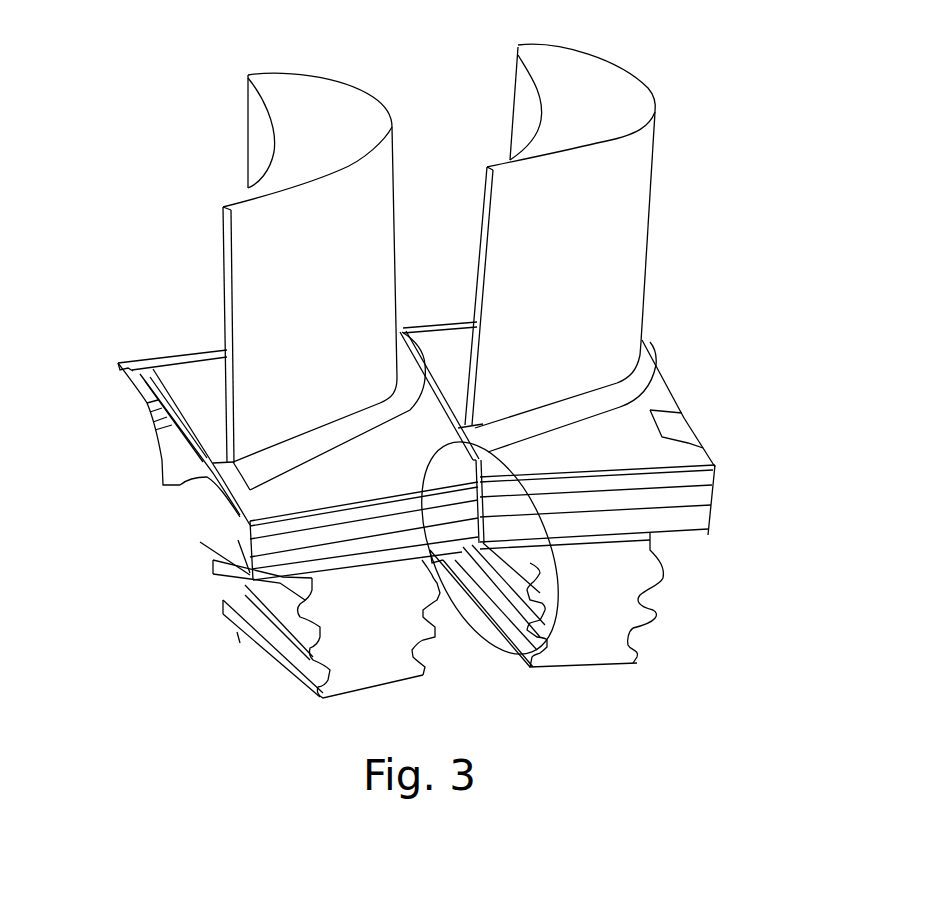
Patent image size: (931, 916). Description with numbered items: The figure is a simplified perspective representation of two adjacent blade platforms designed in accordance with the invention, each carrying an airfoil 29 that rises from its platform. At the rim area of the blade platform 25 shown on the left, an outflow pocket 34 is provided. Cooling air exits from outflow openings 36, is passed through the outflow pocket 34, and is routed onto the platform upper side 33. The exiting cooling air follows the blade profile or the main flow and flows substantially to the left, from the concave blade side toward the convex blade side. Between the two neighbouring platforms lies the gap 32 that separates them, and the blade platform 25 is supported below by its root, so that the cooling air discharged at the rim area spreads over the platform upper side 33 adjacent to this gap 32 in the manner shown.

The blade platform 25 is at (182, 436).
The airfoil blade 29 is at (293, 137).
The gap between adjacent platforms 32 is at (430, 345).
The platform upper side 33 is at (245, 520).
The outflow pocket 34 is at (672, 428).
The outflow openings 36 is at (573, 667).